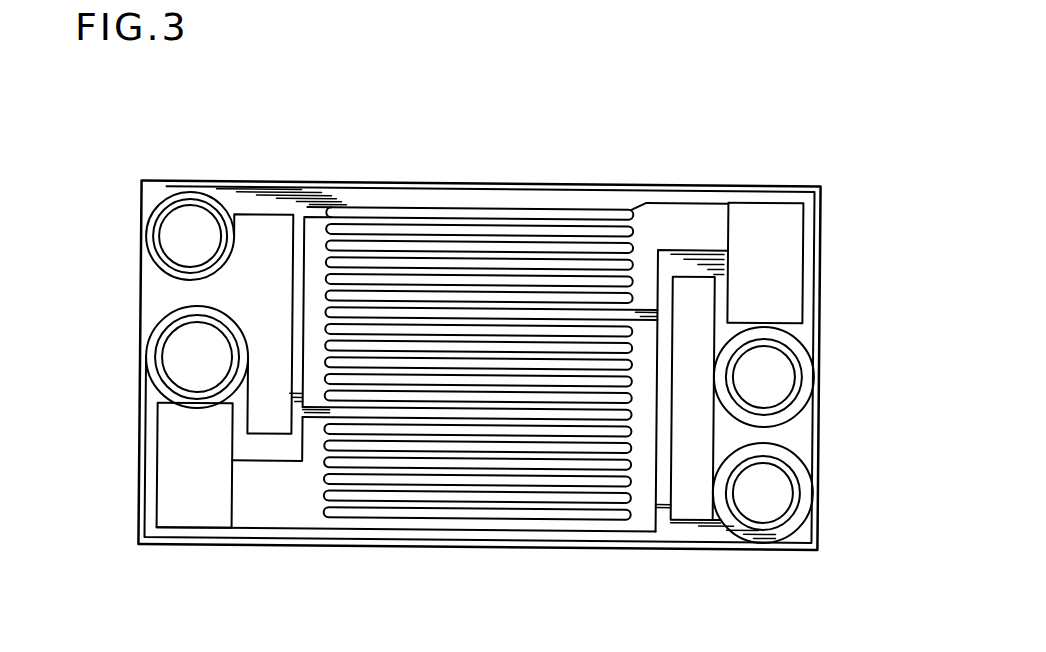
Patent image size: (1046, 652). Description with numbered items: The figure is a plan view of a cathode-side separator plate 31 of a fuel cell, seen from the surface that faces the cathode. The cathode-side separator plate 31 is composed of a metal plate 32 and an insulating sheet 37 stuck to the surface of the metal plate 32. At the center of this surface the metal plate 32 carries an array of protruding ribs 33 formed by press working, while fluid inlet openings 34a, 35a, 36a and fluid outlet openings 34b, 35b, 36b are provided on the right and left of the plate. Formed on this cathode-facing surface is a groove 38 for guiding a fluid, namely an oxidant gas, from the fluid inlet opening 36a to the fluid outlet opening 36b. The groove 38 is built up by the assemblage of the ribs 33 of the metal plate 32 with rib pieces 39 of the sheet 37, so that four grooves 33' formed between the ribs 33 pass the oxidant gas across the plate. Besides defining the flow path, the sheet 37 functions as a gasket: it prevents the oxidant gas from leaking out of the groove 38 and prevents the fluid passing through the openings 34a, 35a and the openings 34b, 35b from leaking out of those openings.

The cathode-side separator plate 31 is at (380, 170).
The metal plate 32 is at (796, 190).
The protruding ribs 33 is at (408, 367).
The grooves 33' is at (478, 367).
The fluid inlet opening 34a is at (777, 495).
The fluid outlet opening 34b is at (187, 240).
The fluid inlet opening 35a is at (772, 380).
The fluid outlet opening 35b is at (195, 358).
The fluid inlet opening 36a is at (775, 267).
The fluid outlet opening 36b is at (195, 477).
The insulating sheet 37 is at (258, 205).
The groove 38 is at (648, 226).
The rib pieces 39 is at (643, 311).